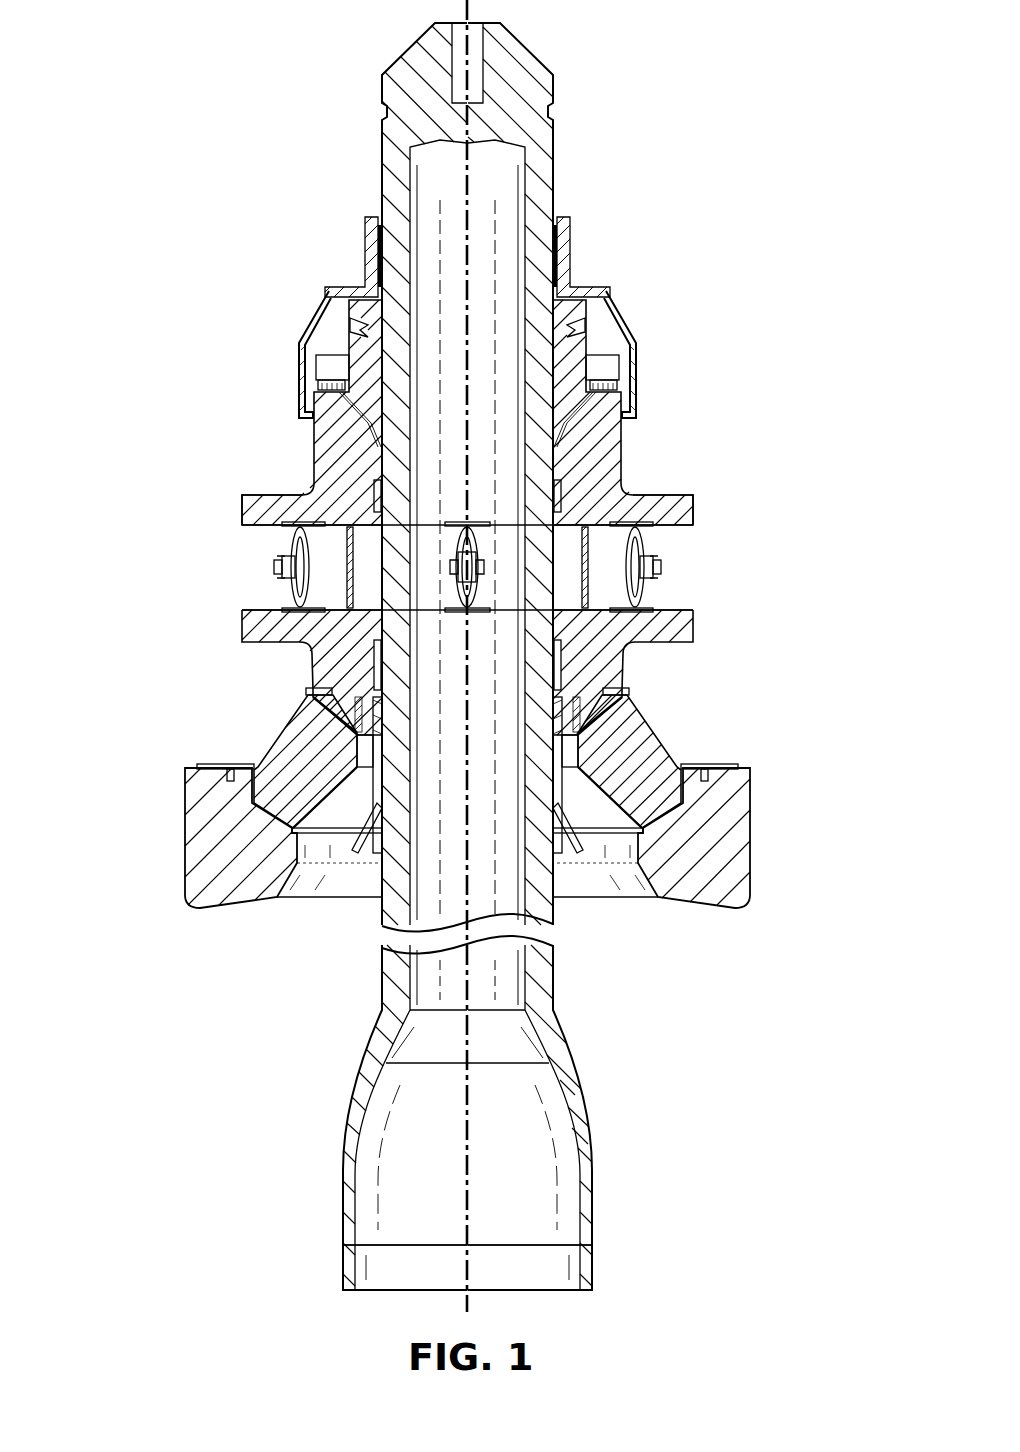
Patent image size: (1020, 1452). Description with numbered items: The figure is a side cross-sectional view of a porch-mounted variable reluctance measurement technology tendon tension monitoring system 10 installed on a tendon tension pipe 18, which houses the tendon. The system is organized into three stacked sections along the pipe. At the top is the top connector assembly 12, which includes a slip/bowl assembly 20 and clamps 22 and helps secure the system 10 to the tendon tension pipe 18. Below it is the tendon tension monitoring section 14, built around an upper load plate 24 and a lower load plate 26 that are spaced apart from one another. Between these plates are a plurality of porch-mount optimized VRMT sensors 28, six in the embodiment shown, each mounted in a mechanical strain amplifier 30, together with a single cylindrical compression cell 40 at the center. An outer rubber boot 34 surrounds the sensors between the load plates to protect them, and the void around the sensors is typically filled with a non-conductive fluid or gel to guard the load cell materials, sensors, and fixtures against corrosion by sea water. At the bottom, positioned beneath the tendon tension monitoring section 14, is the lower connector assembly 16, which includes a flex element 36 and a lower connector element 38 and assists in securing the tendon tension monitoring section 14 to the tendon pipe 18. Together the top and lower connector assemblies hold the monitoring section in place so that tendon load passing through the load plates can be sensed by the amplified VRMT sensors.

The porch mount variable reluctance measurement technology tendon tension monitoring 10 is at (630, 62).
The top connector assembly 12 is at (98, 30).
The tendon tension monitoring section 14 is at (98, 425).
The lower connector assembly 16 is at (98, 695).
The tendon tension pipe 18 is at (346, 1262).
The slip/bowl assembly 20 is at (357, 292).
The clamps 22 is at (350, 322).
The upper load plate 24 is at (250, 510).
The lower load plate 26 is at (248, 624).
The porch-mount optimized VRMT sensor 28 is at (694, 578).
The mechanical strain amplifier 30 is at (674, 543).
The rubber boot 34 is at (244, 567).
The flex element 36 is at (298, 722).
The lower connector element 38 is at (196, 845).
The cylindrical compression cell 40 is at (342, 612).